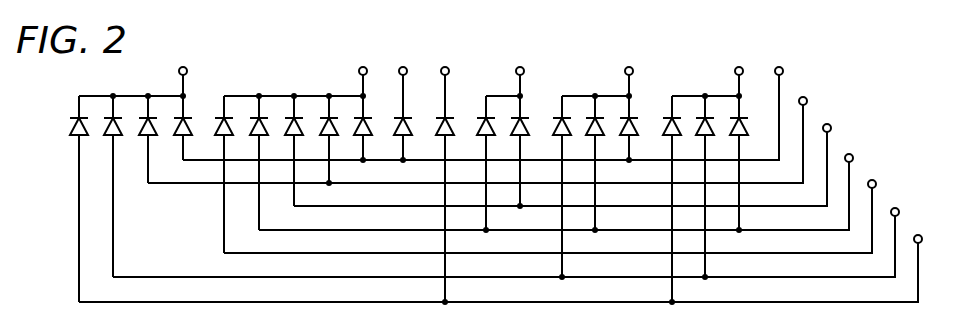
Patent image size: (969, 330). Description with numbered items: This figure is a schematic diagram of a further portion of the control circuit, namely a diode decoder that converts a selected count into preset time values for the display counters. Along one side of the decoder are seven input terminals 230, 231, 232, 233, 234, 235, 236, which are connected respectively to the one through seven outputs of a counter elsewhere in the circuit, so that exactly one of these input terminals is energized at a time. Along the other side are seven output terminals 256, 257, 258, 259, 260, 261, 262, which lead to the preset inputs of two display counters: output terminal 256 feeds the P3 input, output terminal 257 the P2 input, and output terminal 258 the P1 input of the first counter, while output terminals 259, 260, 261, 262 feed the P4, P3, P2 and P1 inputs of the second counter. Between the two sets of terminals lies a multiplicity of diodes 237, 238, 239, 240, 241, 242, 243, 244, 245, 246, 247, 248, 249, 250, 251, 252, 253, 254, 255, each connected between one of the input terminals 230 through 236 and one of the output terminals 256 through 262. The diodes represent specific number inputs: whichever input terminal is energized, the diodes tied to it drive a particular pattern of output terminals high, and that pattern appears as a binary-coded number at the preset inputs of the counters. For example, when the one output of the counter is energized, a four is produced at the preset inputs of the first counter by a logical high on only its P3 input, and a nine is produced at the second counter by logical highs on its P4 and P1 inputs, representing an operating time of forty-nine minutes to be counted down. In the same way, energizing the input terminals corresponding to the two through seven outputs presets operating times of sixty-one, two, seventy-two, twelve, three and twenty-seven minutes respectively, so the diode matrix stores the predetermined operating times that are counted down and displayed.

The input terminal 230 is at (937, 225).
The input terminal 231 is at (910, 198).
The input terminal 232 is at (891, 170).
The input terminal 233 is at (868, 143).
The input terminal 234 is at (845, 113).
The input terminal 235 is at (820, 86).
The input terminal 236 is at (775, 71).
The diode 237 is at (746, 128).
The diode 238 is at (698, 130).
The diode 239 is at (664, 130).
The diode 240 is at (636, 128).
The diode 241 is at (598, 140).
The diode 242 is at (554, 130).
The diode 243 is at (526, 129).
The diode 244 is at (480, 130).
The diode 245 is at (436, 128).
The diode 246 is at (396, 128).
The diode 247 is at (369, 128).
The diode 248 is at (333, 138).
The diode 249 is at (290, 113).
The diode 250 is at (254, 113).
The diode 251 is at (218, 114).
The diode 252 is at (191, 126).
The diode 253 is at (150, 138).
The diode 254 is at (119, 128).
The diode 255 is at (70, 126).
The output terminal 256 is at (749, 57).
The output terminal 257 is at (625, 71).
The output terminal 258 is at (516, 71).
The output terminal 259 is at (467, 57).
The output terminal 260 is at (399, 71).
The output terminal 261 is at (359, 70).
The output terminal 262 is at (179, 70).